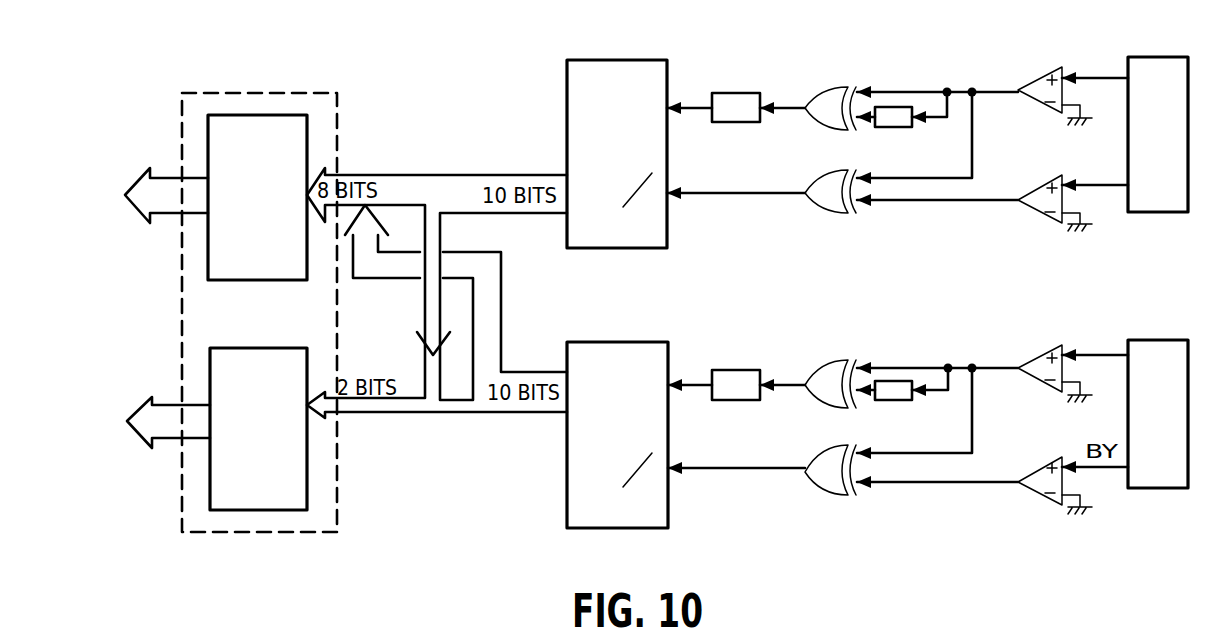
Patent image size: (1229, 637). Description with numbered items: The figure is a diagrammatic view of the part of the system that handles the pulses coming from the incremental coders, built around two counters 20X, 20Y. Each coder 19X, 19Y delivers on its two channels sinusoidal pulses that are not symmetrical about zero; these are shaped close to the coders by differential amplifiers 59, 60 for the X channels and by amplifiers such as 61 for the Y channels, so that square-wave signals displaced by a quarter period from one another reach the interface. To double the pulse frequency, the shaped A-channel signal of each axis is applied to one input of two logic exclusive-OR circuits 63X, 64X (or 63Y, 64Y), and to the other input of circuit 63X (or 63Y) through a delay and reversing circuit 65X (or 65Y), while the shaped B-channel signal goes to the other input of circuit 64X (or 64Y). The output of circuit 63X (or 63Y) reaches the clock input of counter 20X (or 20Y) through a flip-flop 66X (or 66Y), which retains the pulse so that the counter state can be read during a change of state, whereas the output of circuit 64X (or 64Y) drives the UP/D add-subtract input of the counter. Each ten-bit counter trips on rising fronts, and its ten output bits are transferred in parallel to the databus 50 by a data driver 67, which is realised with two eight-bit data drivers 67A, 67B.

The coder 19X is at (1165, 183).
The coder 19Y is at (1163, 455).
The counter 20X is at (569, 133).
The counter 20Y is at (577, 466).
The databus 50 is at (149, 308).
The amplifier 59 is at (1038, 89).
The amplifier 60 is at (1040, 202).
The amplifier 61 is at (1037, 365).
The logic exclusive-OR circuit 63X is at (827, 88).
The logic exclusive-OR circuit 63Y is at (825, 360).
The logic exclusive-OR circuit 64X is at (823, 197).
The logic exclusive-OR circuit 64Y is at (826, 470).
The delay and reversing circuit 65X is at (897, 112).
The delay and reversing circuit 65Y is at (890, 390).
The flip-flop 66X is at (740, 96).
The flip-flop 66Y is at (745, 322).
The data driver 67 is at (337, 455).
The data driver 67A is at (277, 212).
The data driver 67B is at (282, 438).